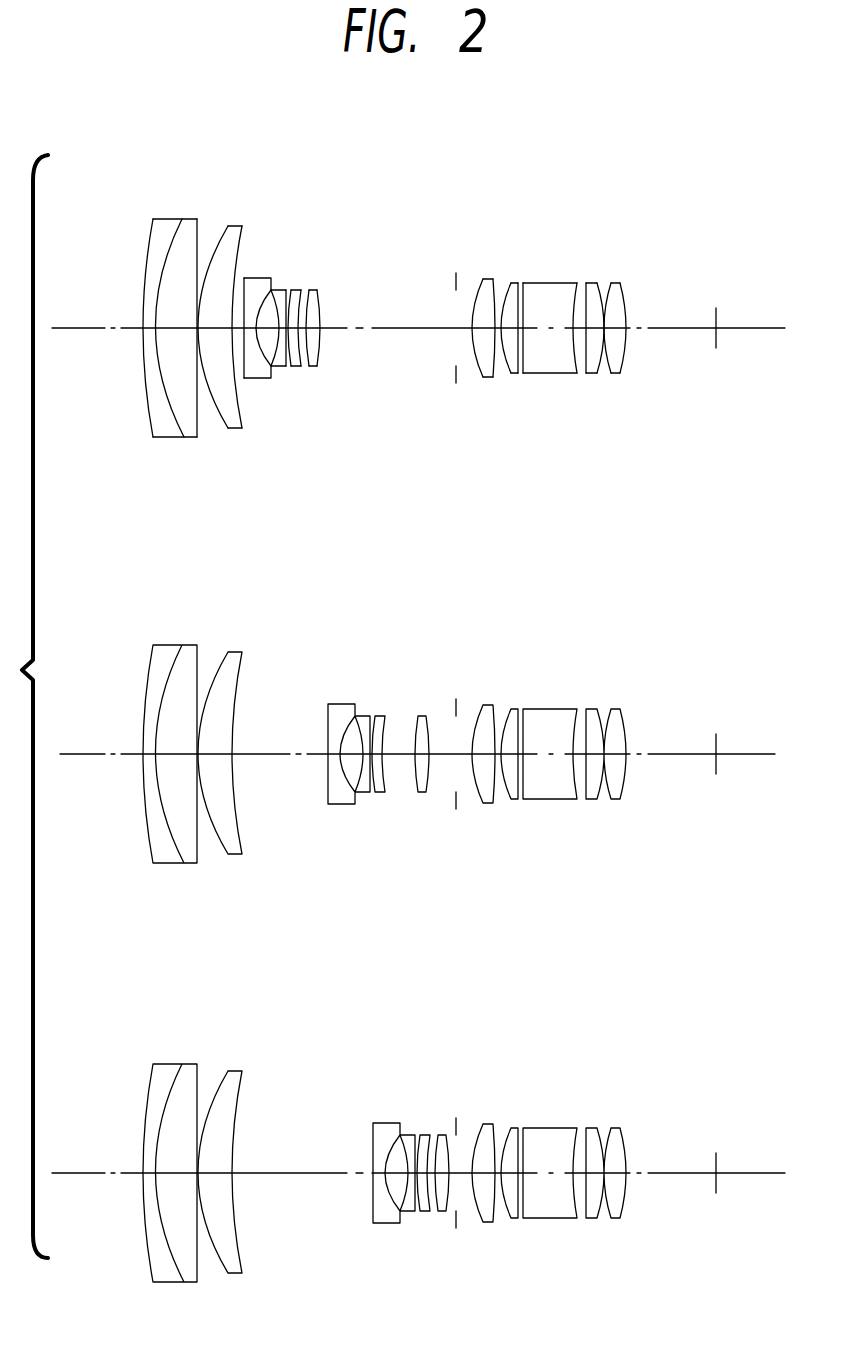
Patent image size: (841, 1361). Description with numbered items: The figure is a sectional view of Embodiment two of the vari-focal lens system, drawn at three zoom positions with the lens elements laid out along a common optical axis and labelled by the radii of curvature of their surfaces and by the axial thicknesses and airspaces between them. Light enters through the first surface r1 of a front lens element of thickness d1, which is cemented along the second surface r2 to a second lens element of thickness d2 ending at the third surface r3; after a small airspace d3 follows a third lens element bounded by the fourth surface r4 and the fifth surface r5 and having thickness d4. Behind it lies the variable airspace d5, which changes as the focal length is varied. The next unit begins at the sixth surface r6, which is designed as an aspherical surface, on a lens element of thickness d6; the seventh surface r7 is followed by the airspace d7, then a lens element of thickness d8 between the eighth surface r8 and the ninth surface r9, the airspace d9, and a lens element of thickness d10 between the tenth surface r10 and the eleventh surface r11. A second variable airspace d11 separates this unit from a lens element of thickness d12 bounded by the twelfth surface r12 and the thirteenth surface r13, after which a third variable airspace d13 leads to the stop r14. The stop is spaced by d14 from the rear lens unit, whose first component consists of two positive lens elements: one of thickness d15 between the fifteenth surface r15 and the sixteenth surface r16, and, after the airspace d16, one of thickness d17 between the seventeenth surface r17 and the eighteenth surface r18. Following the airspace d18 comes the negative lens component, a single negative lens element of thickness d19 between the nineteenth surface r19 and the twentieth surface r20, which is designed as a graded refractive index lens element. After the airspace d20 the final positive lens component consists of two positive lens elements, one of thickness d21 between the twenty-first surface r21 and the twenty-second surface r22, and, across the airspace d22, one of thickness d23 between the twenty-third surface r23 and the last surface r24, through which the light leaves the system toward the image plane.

The first lens surface r1 is at (148, 248).
The second lens surface r2 is at (177, 231).
The third lens surface r3 is at (196, 253).
The fourth lens surface r4 is at (222, 241).
The fifth lens surface r5 is at (239, 236).
The sixth lens surface r6 is at (247, 280).
The seventh lens surface r7 is at (258, 293).
The eighth lens surface r8 is at (273, 291).
The ninth lens surface r9 is at (284, 291).
The tenth lens surface r10 is at (289, 292).
The eleventh lens surface r11 is at (300, 292).
The twelfth lens surface r12 is at (308, 292).
The thirteenth lens surface r13 is at (322, 300).
The stop r14 is at (454, 276).
The fifteenth lens surface r15 is at (476, 278).
The sixteenth lens surface r16 is at (488, 278).
The seventeenth lens surface r17 is at (497, 283).
The eighteenth lens surface r18 is at (516, 282).
The nineteenth lens surface r19 is at (528, 283).
The twentieth lens surface r20 is at (575, 284).
The twenty-first lens surface r21 is at (587, 283).
The twenty-second lens surface r22 is at (597, 283).
The twenty-third lens surface r23 is at (611, 280).
The twenty-fourth lens surface r24 is at (622, 292).
The thickness of first lens element d1 is at (147, 343).
The thickness of second lens element d2 is at (166, 364).
The airspace between second and third lens elements d3 is at (196, 326).
The thickness of third lens element d4 is at (214, 412).
The variable airspace D1 d5 is at (238, 418).
The thickness of fourth lens element d6 is at (253, 386).
The airspace between fourth and fifth lens elements d7 is at (264, 386).
The thickness of fifth lens element d8 is at (277, 380).
The airspace between fifth and sixth lens elements d9 is at (292, 378).
The thickness of sixth lens element d10 is at (300, 322).
The variable airspace D2 d11 is at (307, 375).
The thickness of seventh lens element d12 is at (314, 360).
The variable airspace D3 d13 is at (383, 345).
The airspace between stop and rear lens unit d14 is at (462, 333).
The thickness of eighth lens element d15 is at (478, 370).
The airspace between eighth and ninth lens elements d16 is at (500, 370).
The thickness of ninth lens element d17 is at (513, 375).
The airspace between ninth lens element and graded index lens d18 is at (518, 372).
The thickness of graded refractive index lens element d19 is at (542, 342).
The airspace between graded index lens and positive lens component d20 is at (587, 370).
The thickness of eleventh lens element d21 is at (606, 370).
The airspace between eleventh and twelfth lens elements d22 is at (610, 372).
The thickness of twelfth lens element d23 is at (622, 350).